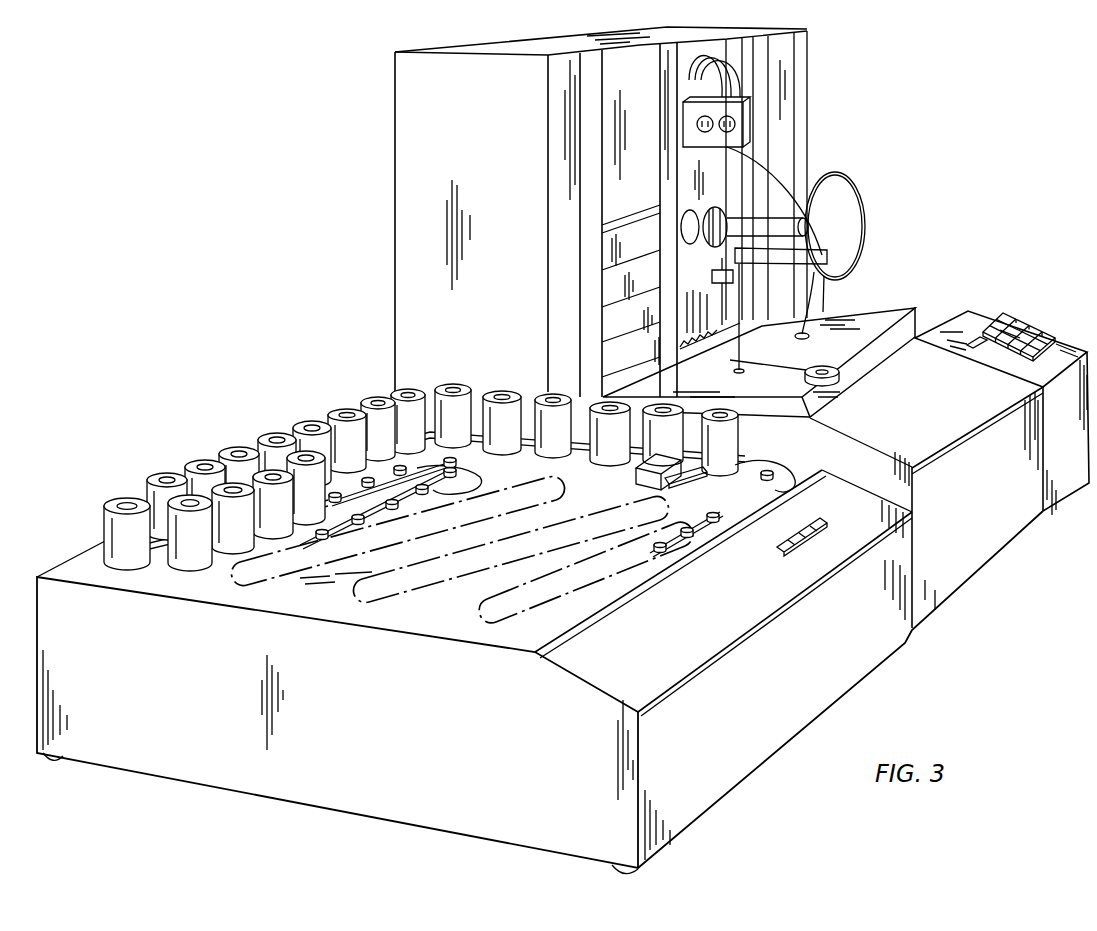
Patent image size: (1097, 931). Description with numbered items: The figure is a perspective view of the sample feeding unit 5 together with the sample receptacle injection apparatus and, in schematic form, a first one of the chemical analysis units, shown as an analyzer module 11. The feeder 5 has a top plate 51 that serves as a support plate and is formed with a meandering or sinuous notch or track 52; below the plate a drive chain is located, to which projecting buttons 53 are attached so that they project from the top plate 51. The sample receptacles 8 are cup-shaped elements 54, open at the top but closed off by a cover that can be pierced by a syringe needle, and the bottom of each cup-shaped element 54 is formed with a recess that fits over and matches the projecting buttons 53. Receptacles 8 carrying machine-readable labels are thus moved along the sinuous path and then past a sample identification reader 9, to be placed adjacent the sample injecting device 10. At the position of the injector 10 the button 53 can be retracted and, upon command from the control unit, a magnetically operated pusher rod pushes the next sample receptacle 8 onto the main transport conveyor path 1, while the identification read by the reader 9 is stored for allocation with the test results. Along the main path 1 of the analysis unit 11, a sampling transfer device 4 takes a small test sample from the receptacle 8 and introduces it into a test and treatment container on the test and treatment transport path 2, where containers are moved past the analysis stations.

The main transport conveyor path 1 is at (903, 332).
The test and treatment transport path 2 is at (708, 342).
The sampling transfer device 4 is at (829, 251).
The sample feeder unit 5 is at (472, 434).
The sample receptacles 8 is at (421, 472).
The sample identification reader 9 is at (633, 477).
The sample injecting device 10 is at (681, 481).
The analyzer module 11 is at (395, 121).
The top plate 51 is at (90, 568).
The track 52 is at (160, 568).
The projecting buttons 53 is at (468, 446).
The cup-shaped elements 54 is at (146, 490).